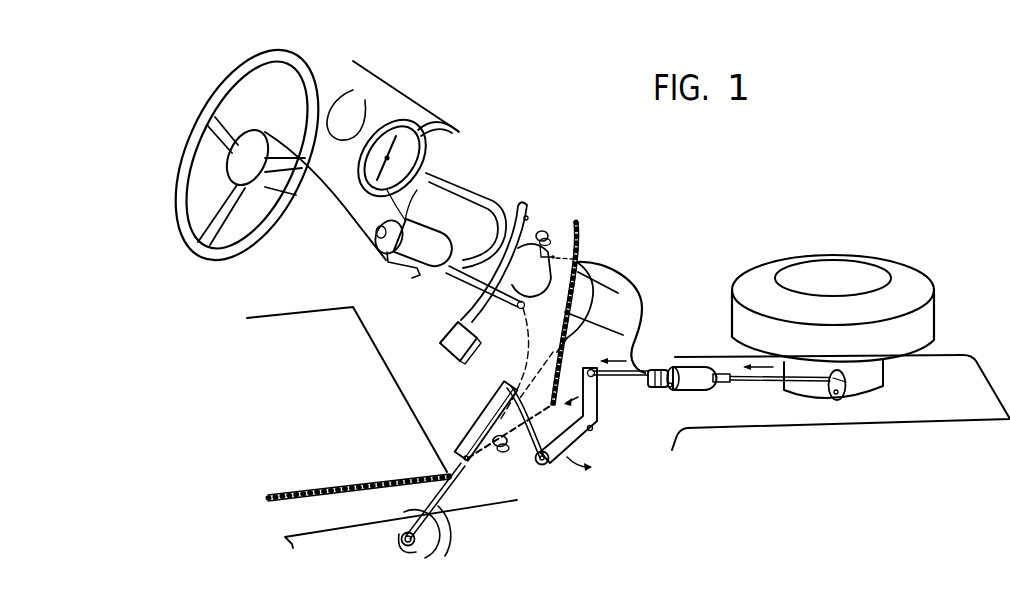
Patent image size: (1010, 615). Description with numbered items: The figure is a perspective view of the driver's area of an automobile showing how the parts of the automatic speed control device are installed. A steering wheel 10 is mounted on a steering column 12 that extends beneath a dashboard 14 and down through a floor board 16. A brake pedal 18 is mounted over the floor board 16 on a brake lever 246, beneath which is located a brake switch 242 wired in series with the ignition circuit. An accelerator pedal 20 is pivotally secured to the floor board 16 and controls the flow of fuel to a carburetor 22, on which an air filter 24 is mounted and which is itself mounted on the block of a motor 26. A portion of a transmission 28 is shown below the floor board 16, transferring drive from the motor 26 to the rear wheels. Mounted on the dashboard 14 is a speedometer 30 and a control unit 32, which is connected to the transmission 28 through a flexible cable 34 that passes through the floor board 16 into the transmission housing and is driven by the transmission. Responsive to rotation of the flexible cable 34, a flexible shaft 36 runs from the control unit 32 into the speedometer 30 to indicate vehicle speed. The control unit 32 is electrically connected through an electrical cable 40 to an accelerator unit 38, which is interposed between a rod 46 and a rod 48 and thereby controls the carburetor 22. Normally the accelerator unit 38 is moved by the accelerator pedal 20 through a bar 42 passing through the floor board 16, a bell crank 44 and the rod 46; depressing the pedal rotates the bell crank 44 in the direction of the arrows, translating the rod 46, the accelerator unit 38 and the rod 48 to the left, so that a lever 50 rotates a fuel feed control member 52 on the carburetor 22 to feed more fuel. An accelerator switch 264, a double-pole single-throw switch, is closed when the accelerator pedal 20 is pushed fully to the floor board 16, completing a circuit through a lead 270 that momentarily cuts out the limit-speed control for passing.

The steering wheel 10 is at (180, 207).
The steering column 12 is at (313, 199).
The dashboard 14 is at (388, 94).
The floor board 16 is at (360, 284).
The brake pedal 18 is at (445, 342).
The accelerator pedal 20 is at (485, 414).
The carburetor 22 is at (876, 374).
The air filter 24 is at (923, 320).
The motor 26 is at (962, 415).
The transmission 28 is at (467, 545).
The speedometer 30 is at (418, 130).
The control unit 32 is at (429, 275).
The flexible cable 34 is at (517, 311).
The flexible shaft 36 is at (466, 188).
The accelerator unit 38 is at (684, 391).
The electrical cable 40 is at (630, 278).
The bar 42 is at (550, 466).
The bell crank 44 is at (597, 427).
The rod 46 is at (623, 378).
The rod 48 is at (776, 381).
The lever 50 is at (843, 381).
The fuel feed control member 52 is at (835, 397).
The brake switch 242 is at (546, 230).
The brake lever 246 is at (529, 203).
The accelerator switch 264 is at (502, 453).
The lead 270 is at (578, 264).